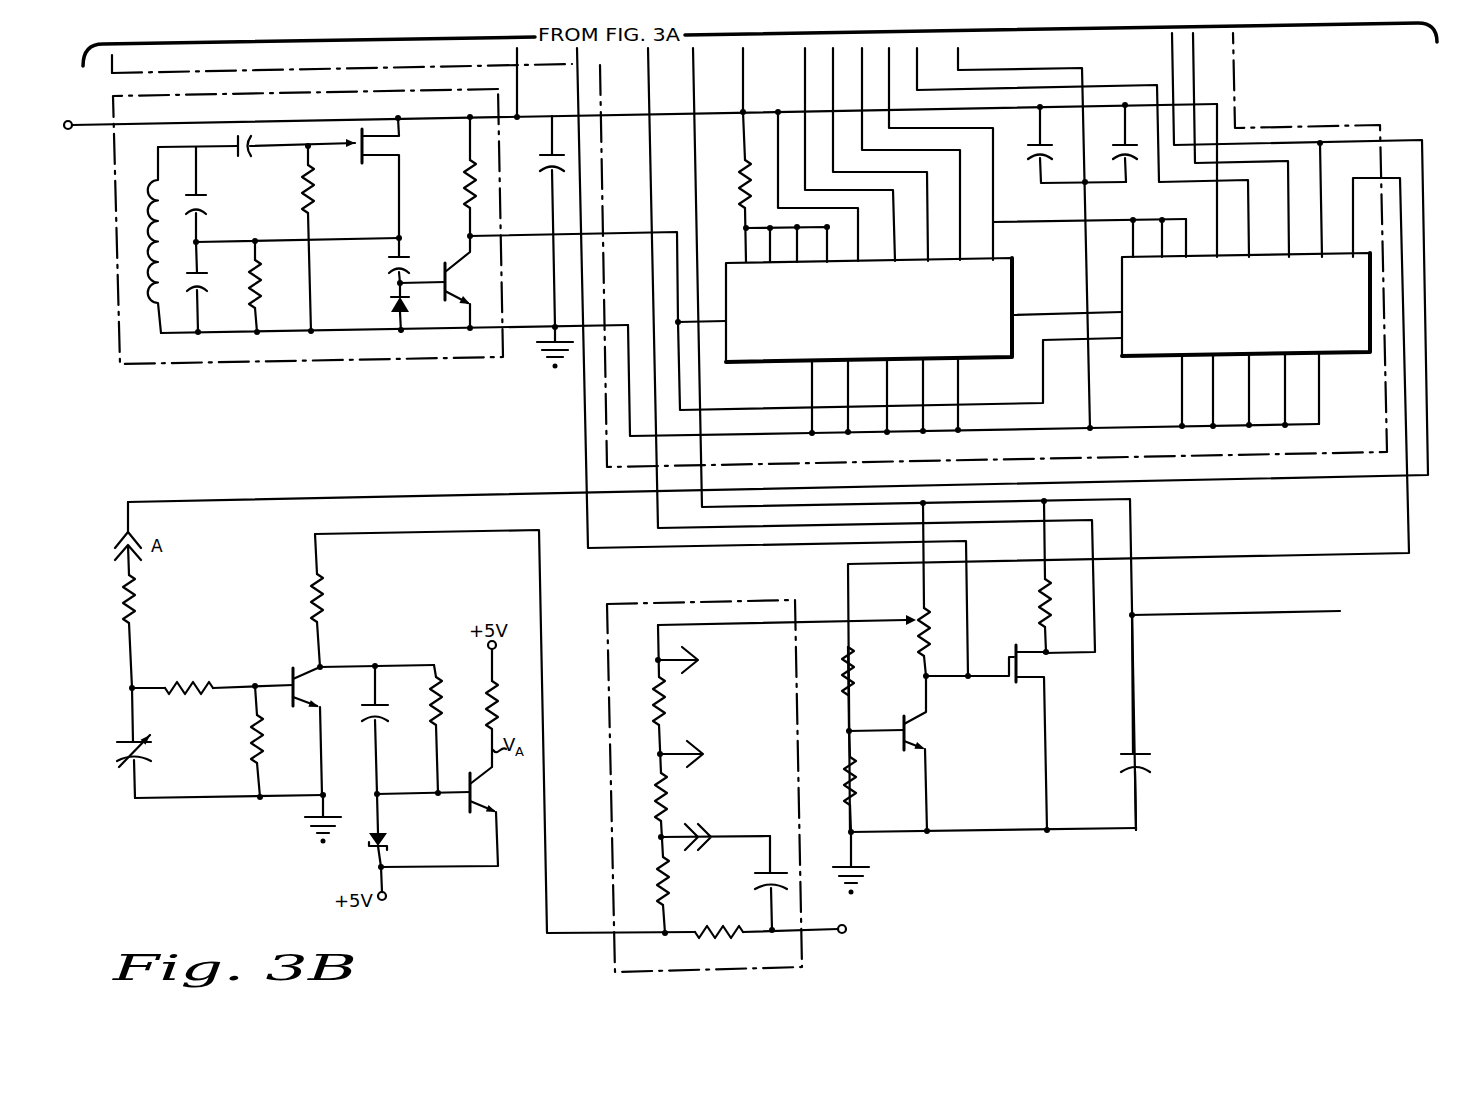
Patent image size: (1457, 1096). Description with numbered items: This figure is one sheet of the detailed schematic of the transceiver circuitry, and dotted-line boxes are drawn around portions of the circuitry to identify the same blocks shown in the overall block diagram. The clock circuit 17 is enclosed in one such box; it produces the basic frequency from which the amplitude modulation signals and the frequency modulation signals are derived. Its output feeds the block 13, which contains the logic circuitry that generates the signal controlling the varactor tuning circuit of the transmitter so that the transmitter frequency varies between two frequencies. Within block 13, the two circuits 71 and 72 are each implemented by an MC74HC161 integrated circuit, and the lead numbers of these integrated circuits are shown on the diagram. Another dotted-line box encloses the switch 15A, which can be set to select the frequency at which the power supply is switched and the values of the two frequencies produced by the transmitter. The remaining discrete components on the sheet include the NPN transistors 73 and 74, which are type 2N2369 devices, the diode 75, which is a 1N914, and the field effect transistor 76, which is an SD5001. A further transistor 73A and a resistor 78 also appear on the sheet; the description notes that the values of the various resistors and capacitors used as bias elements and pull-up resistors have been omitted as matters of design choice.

The clock circuit 17 is at (118, 340).
The block 13 is at (781, 432).
The circuit 71 is at (766, 364).
The circuit 72 is at (1158, 357).
The NPN transistor 73 is at (291, 671).
The transistor 73A is at (470, 782).
The NPN transistor 74 is at (903, 721).
The diode 75 is at (389, 830).
The field effect transistor 76 is at (1016, 683).
The resistor R78 78 is at (338, 600).
The switch 15A is at (757, 603).